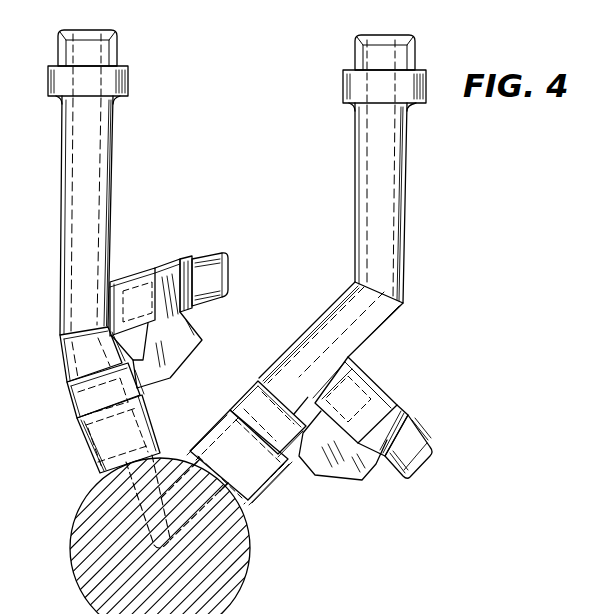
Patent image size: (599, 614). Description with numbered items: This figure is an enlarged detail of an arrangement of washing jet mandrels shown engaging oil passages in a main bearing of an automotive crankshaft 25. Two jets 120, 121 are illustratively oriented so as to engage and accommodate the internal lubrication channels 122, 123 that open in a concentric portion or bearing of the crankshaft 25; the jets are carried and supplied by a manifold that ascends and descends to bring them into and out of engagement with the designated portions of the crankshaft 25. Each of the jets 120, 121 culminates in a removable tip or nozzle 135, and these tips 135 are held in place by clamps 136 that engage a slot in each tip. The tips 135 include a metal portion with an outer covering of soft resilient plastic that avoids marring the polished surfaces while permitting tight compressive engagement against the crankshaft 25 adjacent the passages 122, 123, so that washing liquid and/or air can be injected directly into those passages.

The crankshaft 25 is at (238, 577).
The jet 120 is at (92, 201).
The jet 121 is at (402, 217).
The internal lubrication channel 122 is at (140, 494).
The internal lubrication channel 123 is at (180, 528).
The removable tip 135 is at (155, 418).
The clamp 136 is at (178, 352).